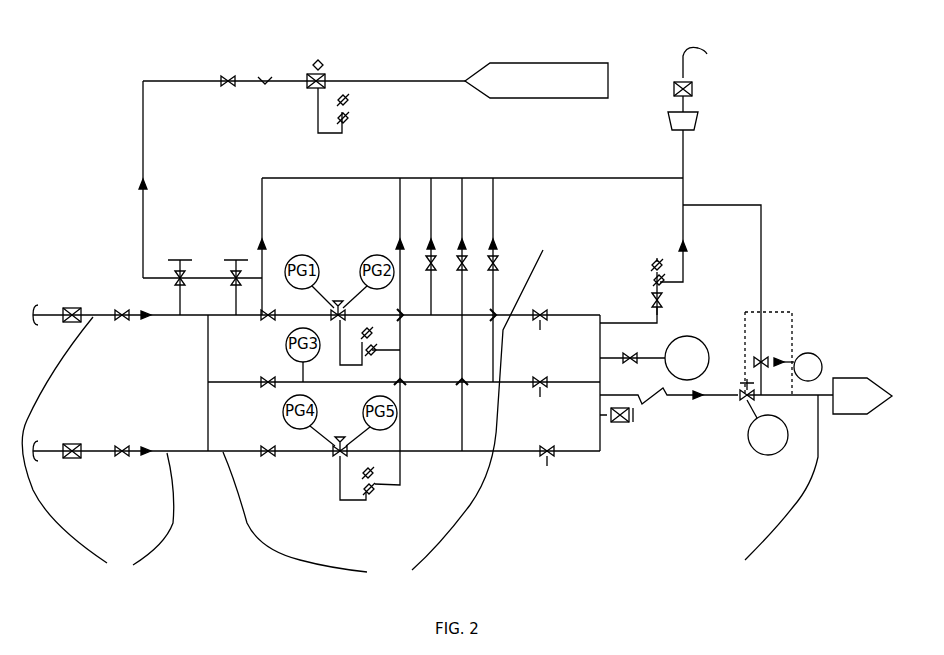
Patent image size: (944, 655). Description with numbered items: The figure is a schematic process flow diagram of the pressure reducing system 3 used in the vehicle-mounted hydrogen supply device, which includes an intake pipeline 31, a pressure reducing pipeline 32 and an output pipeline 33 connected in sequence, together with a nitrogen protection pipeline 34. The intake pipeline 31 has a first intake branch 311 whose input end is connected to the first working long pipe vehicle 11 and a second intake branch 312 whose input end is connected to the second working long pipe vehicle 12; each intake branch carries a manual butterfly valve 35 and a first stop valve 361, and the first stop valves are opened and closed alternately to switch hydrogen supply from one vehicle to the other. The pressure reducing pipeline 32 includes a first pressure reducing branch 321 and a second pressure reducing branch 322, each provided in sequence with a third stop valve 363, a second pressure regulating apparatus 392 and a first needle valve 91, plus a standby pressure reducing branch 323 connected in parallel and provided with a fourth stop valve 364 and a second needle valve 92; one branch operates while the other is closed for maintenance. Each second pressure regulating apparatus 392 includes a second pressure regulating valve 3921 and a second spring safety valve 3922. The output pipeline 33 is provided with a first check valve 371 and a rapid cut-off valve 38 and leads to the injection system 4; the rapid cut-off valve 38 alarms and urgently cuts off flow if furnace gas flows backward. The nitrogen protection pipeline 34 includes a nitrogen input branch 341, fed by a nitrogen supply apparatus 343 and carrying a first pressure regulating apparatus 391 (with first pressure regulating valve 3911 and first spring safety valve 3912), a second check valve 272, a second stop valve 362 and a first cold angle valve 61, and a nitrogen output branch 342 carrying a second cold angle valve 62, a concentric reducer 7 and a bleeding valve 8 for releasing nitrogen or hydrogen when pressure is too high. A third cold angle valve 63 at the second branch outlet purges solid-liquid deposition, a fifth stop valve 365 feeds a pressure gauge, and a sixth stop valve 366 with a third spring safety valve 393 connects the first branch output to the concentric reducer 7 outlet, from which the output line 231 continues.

The pressure reducing system 3 is at (138, 173).
The injection system 4 is at (842, 413).
The concentric reducer 7 is at (700, 120).
The bleeding valve 8 is at (697, 90).
The first working long pipe vehicle 11 is at (35, 312).
The second working long pipe vehicle 12 is at (33, 440).
The intake pipeline 31 is at (98, 449).
The pressure reducing pipeline 32 is at (399, 572).
The output pipeline 33 is at (778, 480).
The nitrogen protection pipeline 34 is at (300, 177).
The manual butterfly valve 35 is at (72, 308).
The rapid cut-off valve 38 is at (807, 310).
The first cold angle valve 61 is at (180, 265).
The second cold angle valve 62 is at (238, 265).
The third cold angle valve 63 is at (622, 425).
The first needle valve 91 is at (548, 315).
The second needle valve 92 is at (541, 398).
The outlet pipeline 231 is at (820, 400).
The check valve 272 is at (260, 75).
The first intake branch 311 is at (93, 318).
The second intake branch 312 is at (170, 455).
The first pressure reducing branch 321 is at (552, 283).
The second pressure reducing branch 322 is at (225, 455).
The standby pressure reducing branch 323 is at (587, 317).
The nitrogen input branch 341 is at (173, 83).
The nitrogen output branch 342 is at (283, 173).
The nitrogen supply apparatus 343 is at (570, 88).
The first stop valve 361 is at (118, 310).
The second stop valve 362 is at (222, 76).
The third stop valve 363 is at (273, 310).
The fourth stop valve 364 is at (267, 375).
The fifth stop valve 365 is at (635, 352).
The sixth stop valve 366 is at (665, 302).
The first check valve 371 is at (663, 407).
The first pressure regulating apparatus 391 is at (308, 75).
The second pressure regulating apparatus 392 is at (341, 480).
The third spring safety valve 393 is at (658, 258).
The first pressure regulating valve 3911 is at (322, 58).
The first spring safety valve 3912 is at (347, 92).
The second pressure regulating valve 3921 is at (378, 487).
The second spring safety valve 3922 is at (371, 495).